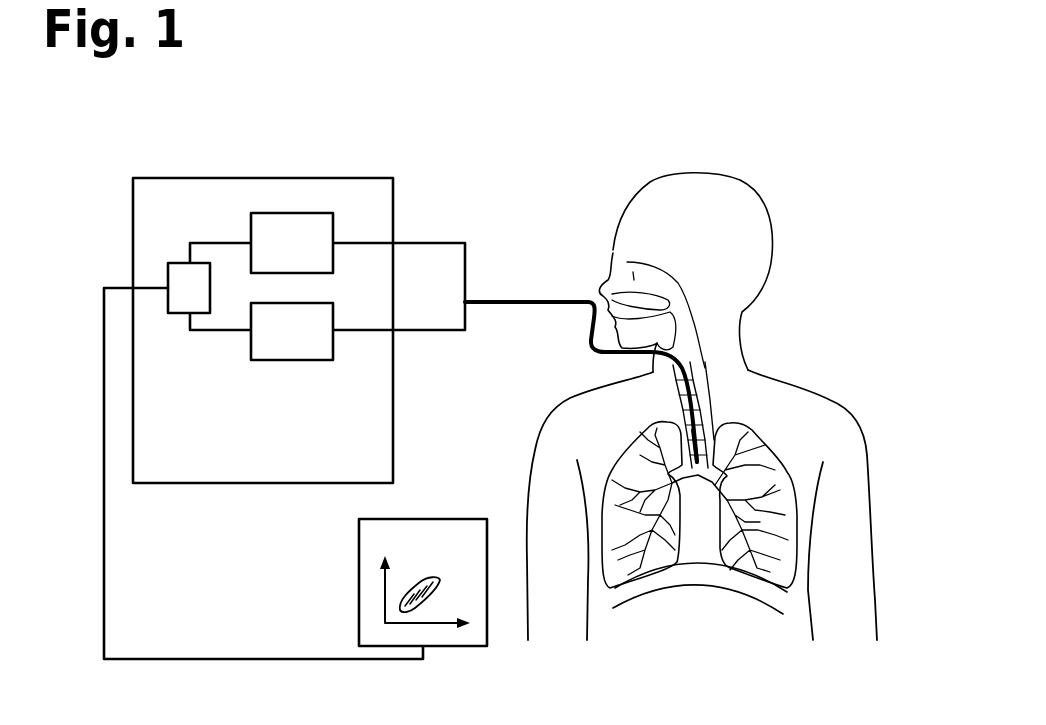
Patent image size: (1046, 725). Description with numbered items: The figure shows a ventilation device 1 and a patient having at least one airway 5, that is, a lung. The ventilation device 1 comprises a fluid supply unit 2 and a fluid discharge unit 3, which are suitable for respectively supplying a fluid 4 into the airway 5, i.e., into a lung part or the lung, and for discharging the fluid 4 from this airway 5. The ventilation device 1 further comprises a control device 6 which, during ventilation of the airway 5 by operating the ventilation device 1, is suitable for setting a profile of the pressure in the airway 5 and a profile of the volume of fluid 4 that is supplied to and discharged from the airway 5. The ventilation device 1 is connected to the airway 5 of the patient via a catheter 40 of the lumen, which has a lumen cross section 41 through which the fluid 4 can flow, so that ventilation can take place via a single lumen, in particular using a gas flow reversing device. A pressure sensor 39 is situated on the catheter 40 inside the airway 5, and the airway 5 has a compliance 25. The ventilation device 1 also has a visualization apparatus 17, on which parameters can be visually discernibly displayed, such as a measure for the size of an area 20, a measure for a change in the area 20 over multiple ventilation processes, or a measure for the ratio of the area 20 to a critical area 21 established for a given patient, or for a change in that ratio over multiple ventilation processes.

The ventilation device 1 is at (283, 192).
The fluid supply unit 2 is at (323, 230).
The fluid discharge unit 3 is at (282, 350).
The fluid 4 is at (528, 302).
The airway 5 is at (783, 447).
The control device 6 is at (183, 298).
The visualization apparatus 17 is at (393, 543).
The area 20 is at (422, 603).
The critical area 21 is at (177, 273).
The compliance 25 is at (757, 513).
The pressure sensor 39 is at (697, 460).
The catheter 40 is at (560, 303).
The lumen cross section 41 is at (573, 302).